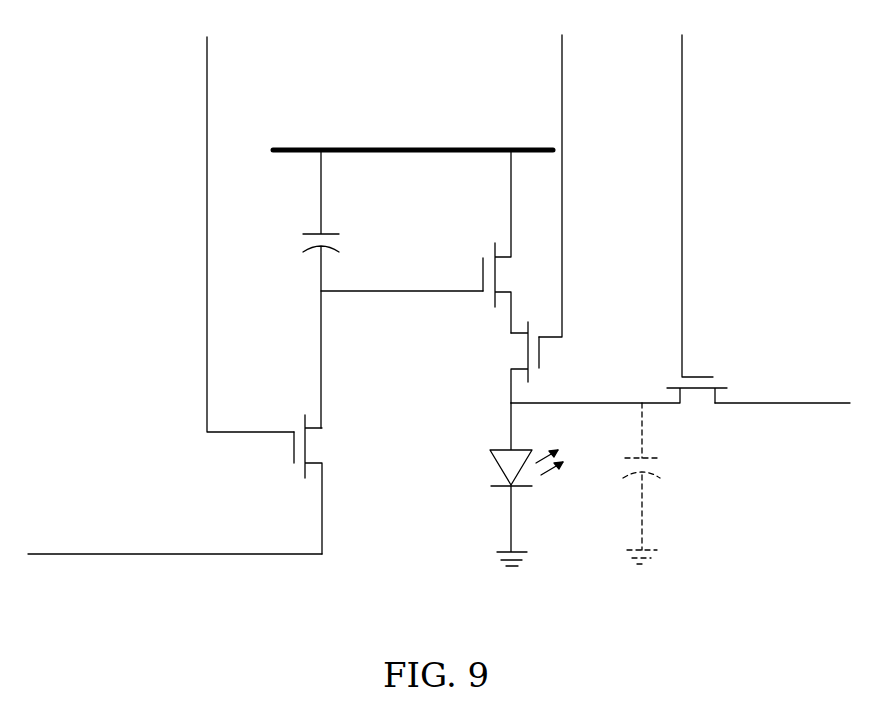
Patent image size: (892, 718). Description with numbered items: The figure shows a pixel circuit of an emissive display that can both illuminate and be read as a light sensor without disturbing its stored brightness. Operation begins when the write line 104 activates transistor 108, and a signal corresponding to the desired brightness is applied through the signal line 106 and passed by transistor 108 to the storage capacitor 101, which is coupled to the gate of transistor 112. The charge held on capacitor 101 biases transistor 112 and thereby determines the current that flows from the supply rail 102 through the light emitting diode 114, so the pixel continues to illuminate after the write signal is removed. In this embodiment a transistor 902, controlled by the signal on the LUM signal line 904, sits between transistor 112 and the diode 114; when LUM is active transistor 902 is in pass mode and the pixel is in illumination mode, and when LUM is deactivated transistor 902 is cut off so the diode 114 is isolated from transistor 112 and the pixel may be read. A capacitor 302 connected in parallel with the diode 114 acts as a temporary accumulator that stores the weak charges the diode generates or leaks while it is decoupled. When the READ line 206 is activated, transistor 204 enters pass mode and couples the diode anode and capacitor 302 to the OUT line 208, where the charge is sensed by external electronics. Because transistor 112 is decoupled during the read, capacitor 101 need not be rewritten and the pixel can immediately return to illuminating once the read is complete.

The write line 104 is at (207, 37).
The supply rail 102 is at (329, 148).
The LUM signal line 904 is at (562, 35).
The READ line 206 is at (682, 37).
The storage capacitor 101 is at (329, 232).
The transistor 112 is at (485, 257).
The transistor 902 is at (518, 353).
The light emitting diode 114 is at (515, 449).
The transistor 204 is at (693, 397).
The OUT line 208 is at (820, 406).
The capacitor 302 is at (655, 470).
The transistor 108 is at (316, 446).
The signal line 106 is at (90, 557).